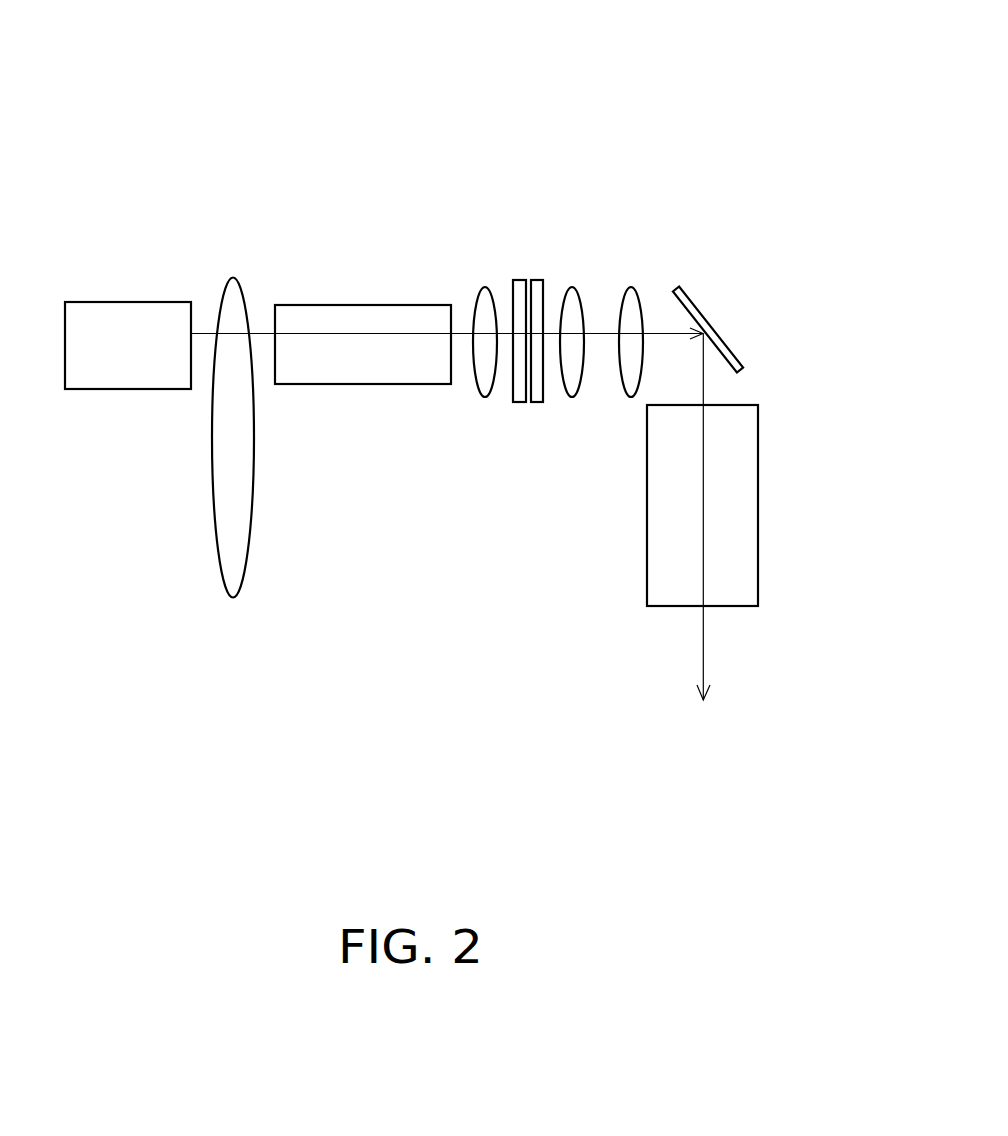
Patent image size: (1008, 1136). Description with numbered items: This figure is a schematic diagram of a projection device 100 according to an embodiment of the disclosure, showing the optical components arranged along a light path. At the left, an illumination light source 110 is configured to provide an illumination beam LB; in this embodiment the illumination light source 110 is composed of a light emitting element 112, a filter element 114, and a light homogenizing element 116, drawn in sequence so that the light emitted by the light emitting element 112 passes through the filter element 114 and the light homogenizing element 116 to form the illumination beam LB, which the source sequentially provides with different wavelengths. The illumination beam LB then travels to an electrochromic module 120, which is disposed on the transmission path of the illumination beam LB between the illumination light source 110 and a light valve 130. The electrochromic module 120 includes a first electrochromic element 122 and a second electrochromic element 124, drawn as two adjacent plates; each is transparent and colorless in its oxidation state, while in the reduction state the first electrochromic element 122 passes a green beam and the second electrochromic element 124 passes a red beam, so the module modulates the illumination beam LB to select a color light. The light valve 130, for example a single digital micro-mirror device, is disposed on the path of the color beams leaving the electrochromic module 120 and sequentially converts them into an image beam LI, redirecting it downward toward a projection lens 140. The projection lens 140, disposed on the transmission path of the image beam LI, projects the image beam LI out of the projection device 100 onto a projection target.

The projection device 100 is at (859, 768).
The illumination light source 110 is at (127, 3).
The light emitting element 112 is at (107, 388).
The filter element 114 is at (234, 585).
The light homogenizing element 116 is at (362, 380).
The electrochromic module 120 is at (592, 170).
The first electrochromic element 122 is at (520, 285).
The second electrochromic element 124 is at (537, 285).
The light valve 130 is at (697, 305).
The projection lens 140 is at (750, 460).
The illumination beam LB is at (203, 333).
The image beam LI is at (704, 658).